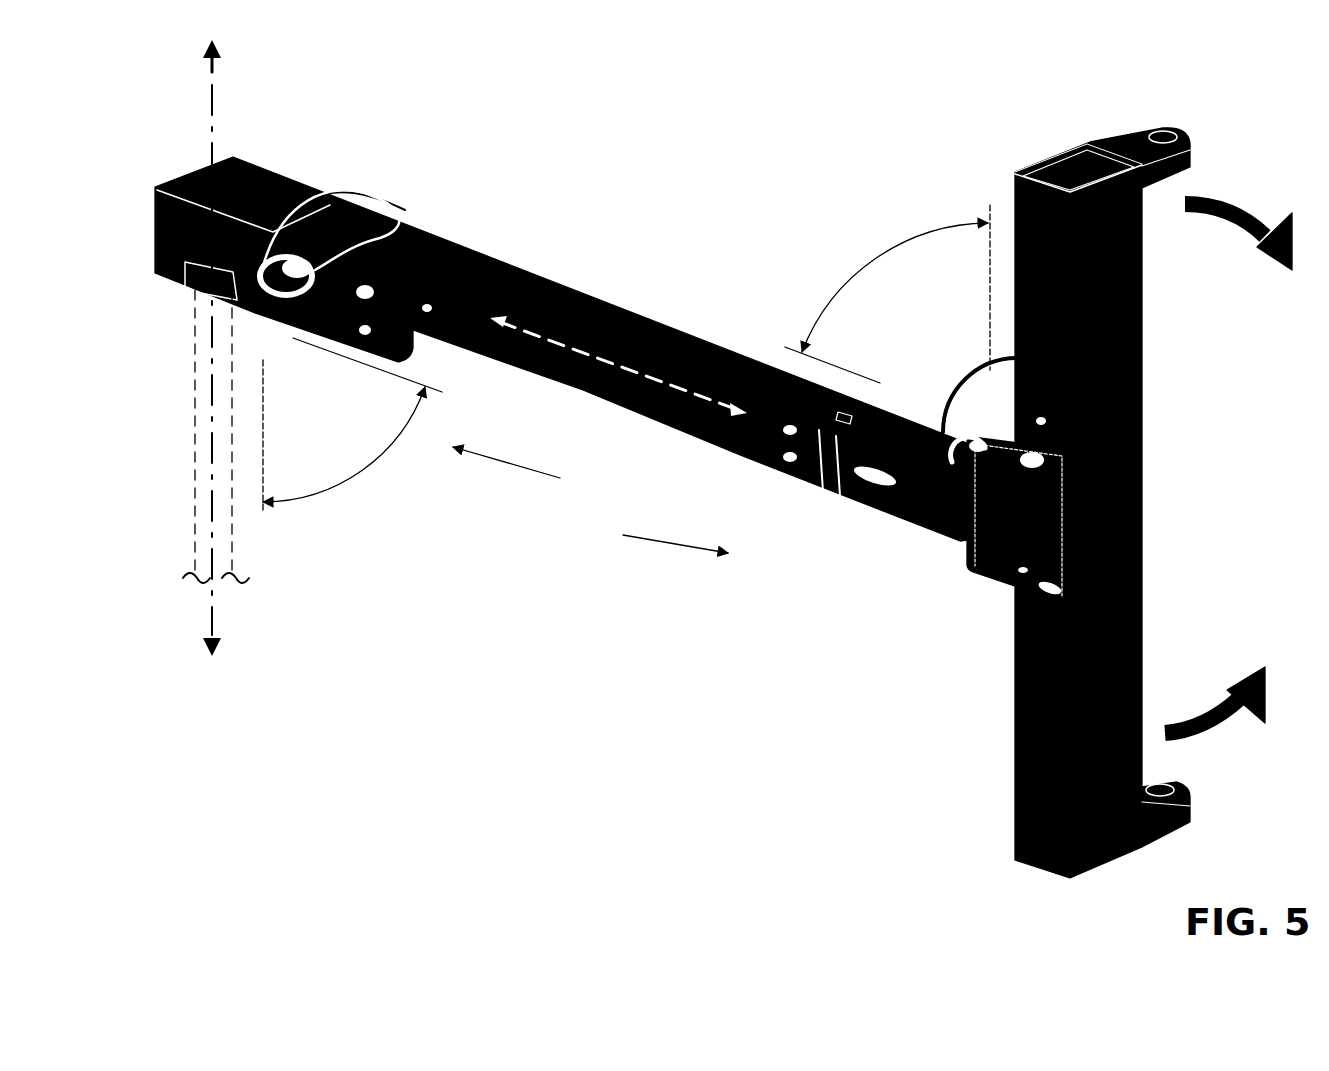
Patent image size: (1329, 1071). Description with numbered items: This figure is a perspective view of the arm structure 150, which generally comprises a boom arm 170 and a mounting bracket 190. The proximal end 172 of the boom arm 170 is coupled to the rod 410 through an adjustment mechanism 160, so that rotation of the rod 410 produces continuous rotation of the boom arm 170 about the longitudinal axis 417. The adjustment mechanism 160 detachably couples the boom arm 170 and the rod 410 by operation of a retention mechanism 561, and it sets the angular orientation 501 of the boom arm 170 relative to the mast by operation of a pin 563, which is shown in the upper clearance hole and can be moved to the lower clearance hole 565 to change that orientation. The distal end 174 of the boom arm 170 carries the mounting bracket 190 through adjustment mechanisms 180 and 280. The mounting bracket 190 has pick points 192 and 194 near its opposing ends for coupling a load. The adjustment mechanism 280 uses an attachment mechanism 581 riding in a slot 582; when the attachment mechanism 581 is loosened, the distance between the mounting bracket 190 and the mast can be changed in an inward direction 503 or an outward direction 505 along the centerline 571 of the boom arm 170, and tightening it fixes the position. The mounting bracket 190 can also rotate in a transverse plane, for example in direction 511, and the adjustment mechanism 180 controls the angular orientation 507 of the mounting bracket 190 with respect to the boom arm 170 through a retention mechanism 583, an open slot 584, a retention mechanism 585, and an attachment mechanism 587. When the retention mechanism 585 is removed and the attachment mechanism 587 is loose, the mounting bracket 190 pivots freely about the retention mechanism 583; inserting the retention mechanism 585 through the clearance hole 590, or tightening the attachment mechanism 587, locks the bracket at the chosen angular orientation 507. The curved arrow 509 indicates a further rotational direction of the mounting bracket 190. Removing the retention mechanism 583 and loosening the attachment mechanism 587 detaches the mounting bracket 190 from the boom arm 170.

The arm structure 150 is at (1219, 49).
The adjustment mechanism 160 is at (280, 173).
The boom arm 170 is at (614, 407).
The proximal end 172 is at (452, 160).
The distal end 174 is at (865, 220).
The adjustment mechanism 180 is at (966, 566).
The mounting bracket 190 is at (1013, 690).
The pick point 192 is at (1192, 142).
The pick point 194 is at (1192, 803).
The adjustment mechanism 280 is at (868, 499).
The rod 410 is at (192, 388).
The longitudinal axis 417 is at (218, 63).
The angular orientation 501 is at (340, 478).
The inward direction 503 is at (505, 478).
The outward direction 505 is at (658, 542).
The angular orientation 507 is at (945, 228).
The first rotation direction 509 is at (1223, 212).
The direction 511 is at (1195, 722).
The retention mechanism 561 is at (315, 270).
The pin 563 is at (376, 290).
The lower clearance hole 565 is at (360, 323).
The centerline 571 is at (680, 387).
The attachment mechanism 581 is at (837, 437).
The slot 582 is at (899, 479).
The retention mechanism 583 is at (1046, 461).
The open slot 584 is at (1070, 594).
The retention mechanism 585 is at (990, 463).
The attachment mechanism 587 is at (1023, 568).
The clearance hole 590 is at (1048, 418).